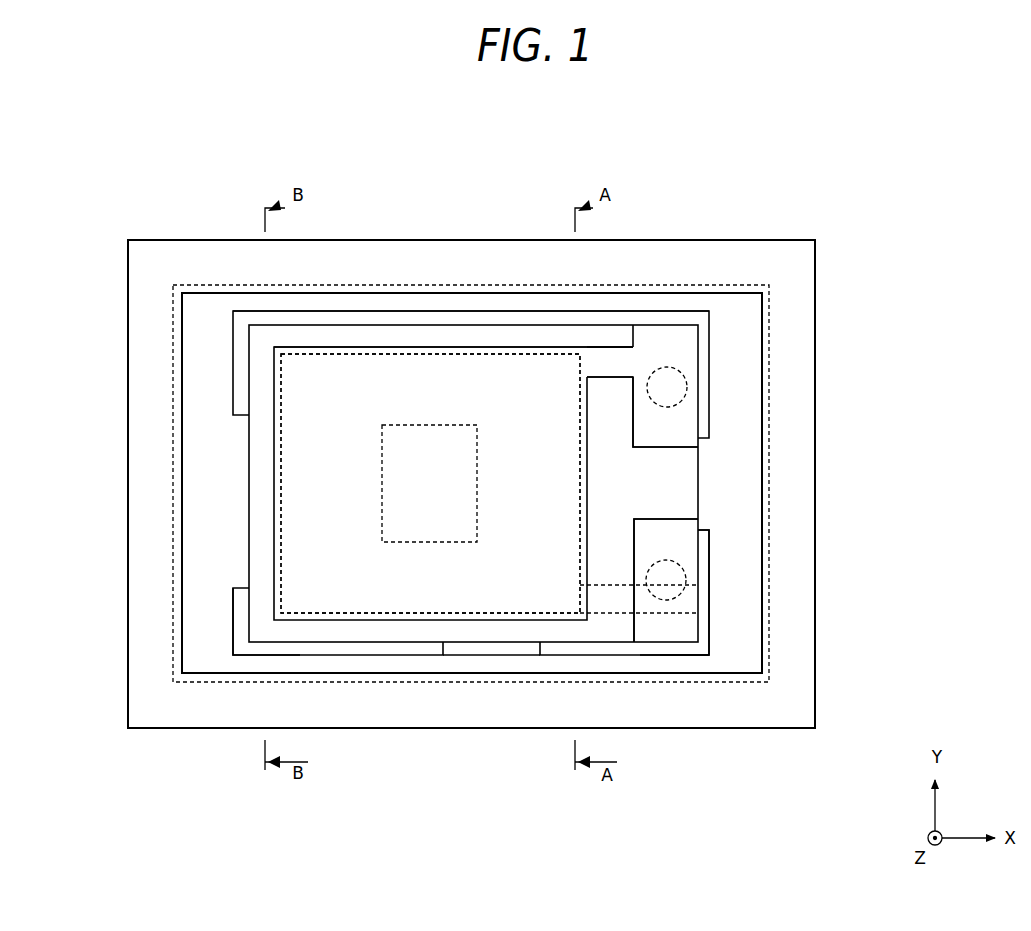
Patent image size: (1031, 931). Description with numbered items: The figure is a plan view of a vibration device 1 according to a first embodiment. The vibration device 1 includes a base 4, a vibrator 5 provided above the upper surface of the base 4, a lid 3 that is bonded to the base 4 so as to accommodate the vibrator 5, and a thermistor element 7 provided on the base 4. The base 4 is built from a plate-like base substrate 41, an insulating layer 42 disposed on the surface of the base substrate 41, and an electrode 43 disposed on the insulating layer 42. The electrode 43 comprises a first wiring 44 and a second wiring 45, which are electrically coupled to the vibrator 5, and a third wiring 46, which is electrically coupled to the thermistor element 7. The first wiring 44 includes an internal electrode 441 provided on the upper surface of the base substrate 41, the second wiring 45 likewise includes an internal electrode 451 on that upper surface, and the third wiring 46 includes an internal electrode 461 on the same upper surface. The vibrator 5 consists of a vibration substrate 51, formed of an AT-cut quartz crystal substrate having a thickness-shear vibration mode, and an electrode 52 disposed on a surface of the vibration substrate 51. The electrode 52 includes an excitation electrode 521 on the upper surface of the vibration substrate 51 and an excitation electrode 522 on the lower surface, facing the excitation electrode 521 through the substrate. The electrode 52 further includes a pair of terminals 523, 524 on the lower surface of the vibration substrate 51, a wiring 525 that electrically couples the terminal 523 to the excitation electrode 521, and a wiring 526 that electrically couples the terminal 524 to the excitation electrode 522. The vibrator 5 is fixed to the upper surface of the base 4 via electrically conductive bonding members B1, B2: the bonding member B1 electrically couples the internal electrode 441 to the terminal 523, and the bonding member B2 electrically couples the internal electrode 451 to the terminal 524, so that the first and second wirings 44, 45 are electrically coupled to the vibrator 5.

The vibration device 1 is at (823, 154).
The lid 3 is at (420, 265).
The base 4 is at (473, 237).
The base substrate 41 is at (147, 352).
The insulating layer 42 is at (205, 422).
The electrode 43 is at (229, 621).
The first wiring 44 is at (493, 309).
The internal electrode 441 is at (336, 321).
The second wiring 45 is at (714, 633).
The internal electrode 451 is at (677, 650).
The third wiring 46 is at (345, 660).
The internal electrode 461 is at (257, 648).
The vibrator 5 is at (366, 321).
The vibration substrate 51 is at (667, 482).
The electrode 52 is at (481, 626).
The excitation electrode 521 is at (318, 490).
The excitation electrode 522 is at (320, 542).
The terminal 523 is at (675, 340).
The terminal 524 is at (677, 542).
The wiring 525 is at (612, 362).
The wiring 526 is at (612, 603).
The thermistor element 7 is at (422, 550).
The electrically conductive bonding member B1 is at (667, 385).
The electrically conductive bonding member B2 is at (666, 580).